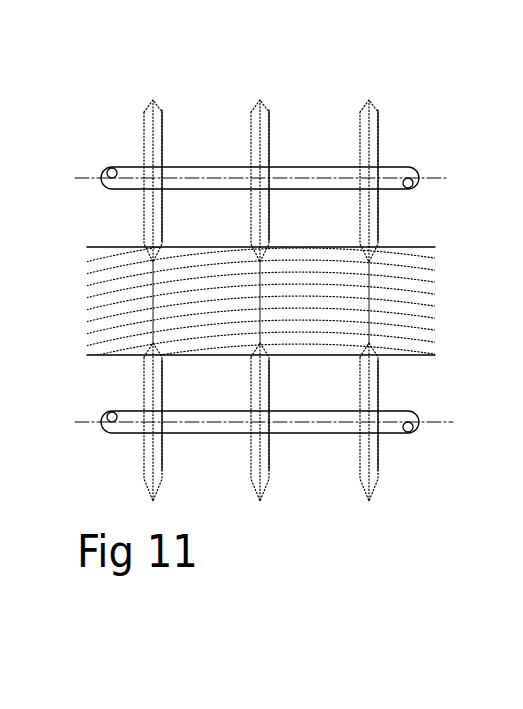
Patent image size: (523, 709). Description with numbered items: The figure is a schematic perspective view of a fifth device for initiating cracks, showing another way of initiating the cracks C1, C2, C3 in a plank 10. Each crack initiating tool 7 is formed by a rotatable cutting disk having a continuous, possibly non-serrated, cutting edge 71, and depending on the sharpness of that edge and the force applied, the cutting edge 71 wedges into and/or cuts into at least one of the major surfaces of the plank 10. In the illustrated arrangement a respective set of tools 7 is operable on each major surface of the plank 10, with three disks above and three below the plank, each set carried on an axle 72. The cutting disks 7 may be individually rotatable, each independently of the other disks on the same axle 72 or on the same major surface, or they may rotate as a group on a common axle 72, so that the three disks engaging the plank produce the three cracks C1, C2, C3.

The crack initiating tool 7 is at (261, 256).
The cutting edge 71 is at (153, 100).
The axle 72 is at (310, 172).
The plank 10 is at (123, 287).
The crack C1 is at (369, 283).
The crack C2 is at (262, 283).
The crack C3 is at (153, 285).